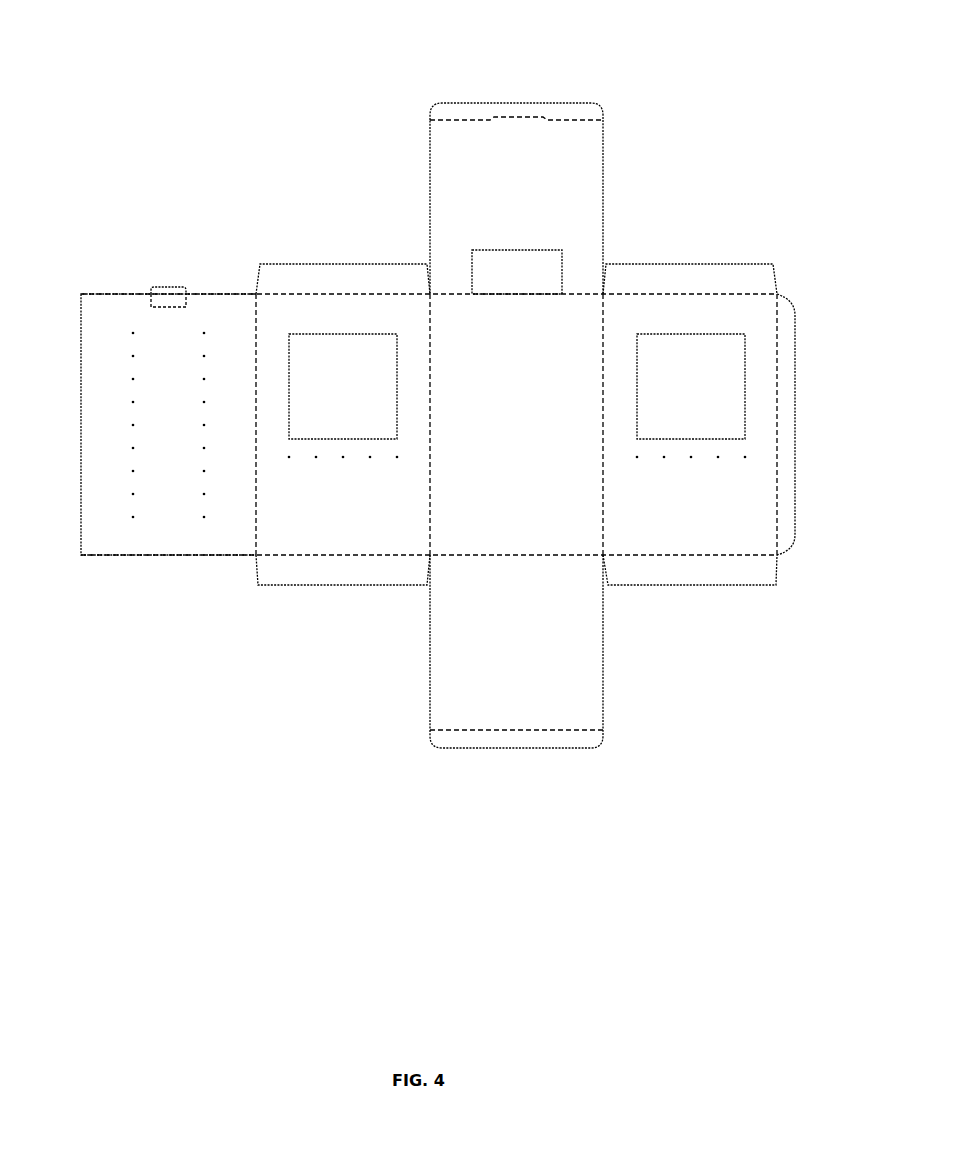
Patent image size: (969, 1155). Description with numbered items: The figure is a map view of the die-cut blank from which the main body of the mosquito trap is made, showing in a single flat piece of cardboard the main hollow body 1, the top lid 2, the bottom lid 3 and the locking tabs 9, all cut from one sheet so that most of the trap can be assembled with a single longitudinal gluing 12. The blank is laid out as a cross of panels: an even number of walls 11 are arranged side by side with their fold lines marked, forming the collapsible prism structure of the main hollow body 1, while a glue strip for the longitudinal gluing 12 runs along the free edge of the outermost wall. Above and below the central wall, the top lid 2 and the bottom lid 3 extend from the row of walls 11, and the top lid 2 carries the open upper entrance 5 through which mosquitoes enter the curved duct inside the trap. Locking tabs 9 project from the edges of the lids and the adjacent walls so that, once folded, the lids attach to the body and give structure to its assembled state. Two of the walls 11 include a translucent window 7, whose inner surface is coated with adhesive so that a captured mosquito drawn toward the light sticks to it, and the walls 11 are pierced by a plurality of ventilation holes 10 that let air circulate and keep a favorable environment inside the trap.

The main hollow body 1 is at (240, 135).
The top lid 2 is at (583, 163).
The bottom lid 3 is at (578, 690).
The open upper entrance 5 is at (527, 268).
The translucent window 7 is at (335, 415).
The locking tabs 9 is at (515, 108).
The ventilation holes 10 is at (204, 427).
The walls 11 is at (155, 338).
The longitudinal gluing 12 is at (790, 385).